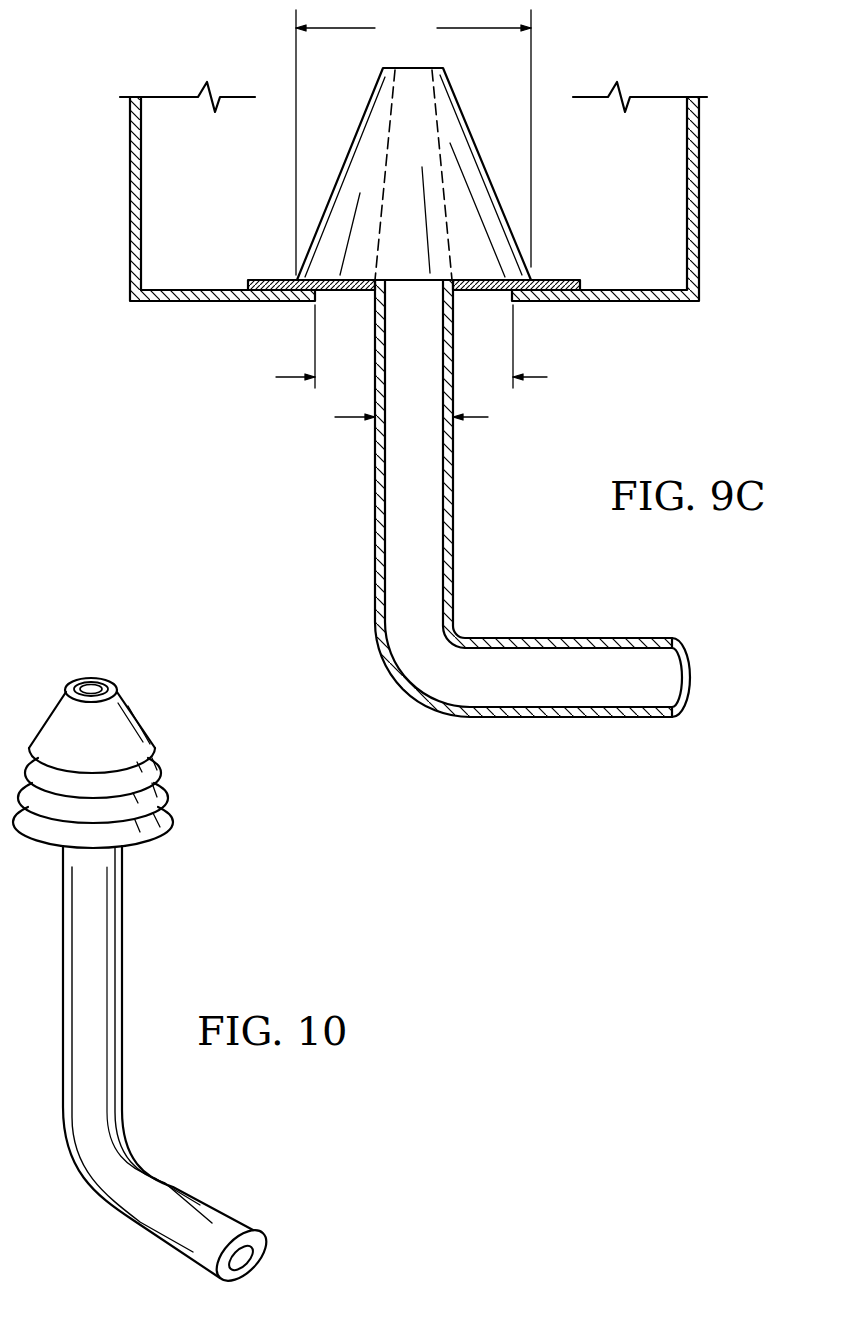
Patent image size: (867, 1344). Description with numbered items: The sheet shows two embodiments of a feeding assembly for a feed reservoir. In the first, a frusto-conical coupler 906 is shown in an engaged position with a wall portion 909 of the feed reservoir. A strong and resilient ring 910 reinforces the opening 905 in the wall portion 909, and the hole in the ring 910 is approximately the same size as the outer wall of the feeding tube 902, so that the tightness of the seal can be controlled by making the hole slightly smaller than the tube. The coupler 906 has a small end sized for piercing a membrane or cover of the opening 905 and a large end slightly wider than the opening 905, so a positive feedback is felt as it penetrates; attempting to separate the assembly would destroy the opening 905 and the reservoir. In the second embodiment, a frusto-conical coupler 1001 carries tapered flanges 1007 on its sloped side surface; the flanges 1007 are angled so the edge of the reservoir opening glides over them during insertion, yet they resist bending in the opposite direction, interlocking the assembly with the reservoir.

In FIG. 9C, the feeding tube 902 is at (503, 667).
In FIG. 9C, the opening 905 is at (483, 295).
In FIG. 9C, the coupler 906 is at (472, 132).
In FIG. 9C, the wall portion 909 is at (637, 302).
In FIG. 9C, the ring 910 is at (567, 280).
In FIG. 10, the frusto-conical coupler 1001 is at (137, 718).
In FIG. 10, the tapered flanges 1007 is at (162, 773).